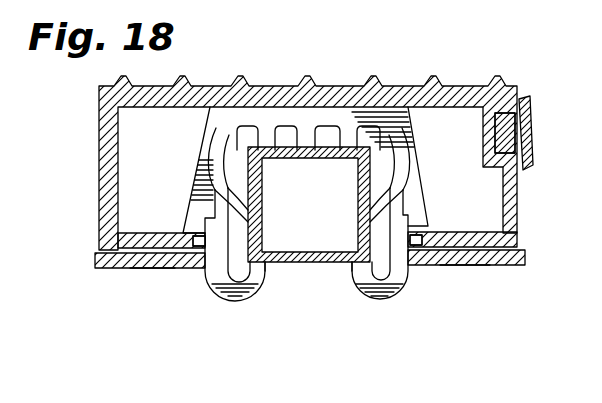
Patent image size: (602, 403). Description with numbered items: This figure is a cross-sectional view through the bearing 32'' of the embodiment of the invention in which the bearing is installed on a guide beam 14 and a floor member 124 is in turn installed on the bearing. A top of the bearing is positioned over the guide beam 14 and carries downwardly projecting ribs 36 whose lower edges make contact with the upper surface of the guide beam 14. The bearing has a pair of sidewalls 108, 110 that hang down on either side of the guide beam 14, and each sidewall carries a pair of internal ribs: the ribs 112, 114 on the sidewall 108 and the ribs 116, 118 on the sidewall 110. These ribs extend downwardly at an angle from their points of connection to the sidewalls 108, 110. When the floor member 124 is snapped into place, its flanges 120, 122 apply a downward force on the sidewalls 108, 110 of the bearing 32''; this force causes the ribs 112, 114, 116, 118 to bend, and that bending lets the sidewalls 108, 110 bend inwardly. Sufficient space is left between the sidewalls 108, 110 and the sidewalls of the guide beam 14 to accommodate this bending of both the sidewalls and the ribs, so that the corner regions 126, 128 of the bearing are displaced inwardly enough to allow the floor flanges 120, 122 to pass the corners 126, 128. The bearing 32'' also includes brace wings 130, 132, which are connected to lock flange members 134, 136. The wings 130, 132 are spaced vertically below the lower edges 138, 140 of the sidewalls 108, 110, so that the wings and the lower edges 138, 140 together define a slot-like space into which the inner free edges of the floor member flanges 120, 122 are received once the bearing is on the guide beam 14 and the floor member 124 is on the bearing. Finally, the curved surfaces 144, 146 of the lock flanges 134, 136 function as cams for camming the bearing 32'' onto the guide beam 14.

The guide beam 14 is at (313, 266).
The bearing 32'' is at (313, 132).
The downwardly projecting ribs 36 is at (347, 126).
The bearing sidewall 108 is at (186, 185).
The bearing sidewall 110 is at (432, 182).
The internal rib 112 is at (255, 186).
The internal rib 114 is at (255, 224).
The internal rib 116 is at (362, 184).
The internal rib 118 is at (362, 221).
The floor member flange 120 is at (152, 270).
The floor member flange 122 is at (460, 268).
The floor member 124 is at (445, 84).
The corner region of the bearing 126 is at (182, 232).
The corner region of the bearing 128 is at (492, 222).
The brace wing 130 is at (117, 272).
The brace wing 132 is at (500, 266).
The lock flange member 134 is at (247, 300).
The lock flange member 136 is at (386, 300).
The lower edge of sidewall 138 is at (200, 260).
The lower edge of sidewall 140 is at (432, 266).
The curved surface 144 is at (272, 292).
The curved surface 146 is at (340, 282).